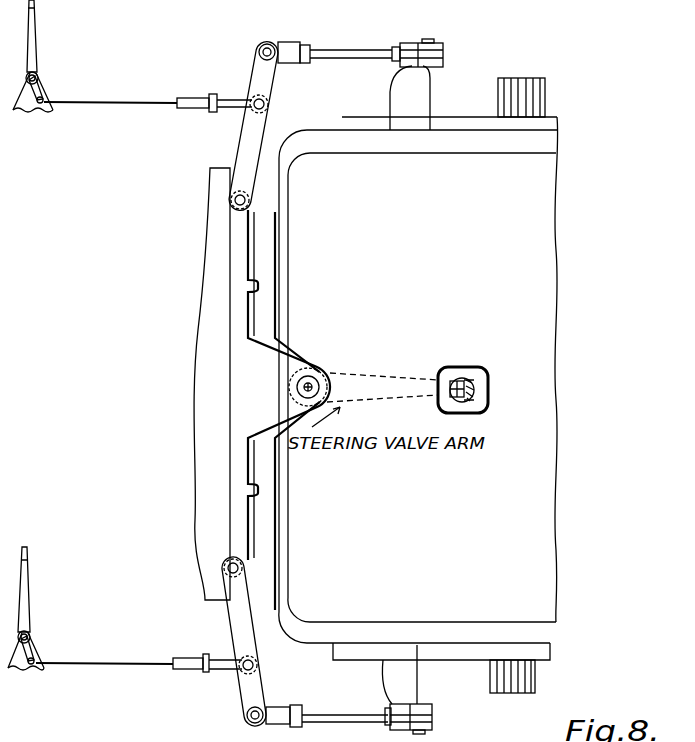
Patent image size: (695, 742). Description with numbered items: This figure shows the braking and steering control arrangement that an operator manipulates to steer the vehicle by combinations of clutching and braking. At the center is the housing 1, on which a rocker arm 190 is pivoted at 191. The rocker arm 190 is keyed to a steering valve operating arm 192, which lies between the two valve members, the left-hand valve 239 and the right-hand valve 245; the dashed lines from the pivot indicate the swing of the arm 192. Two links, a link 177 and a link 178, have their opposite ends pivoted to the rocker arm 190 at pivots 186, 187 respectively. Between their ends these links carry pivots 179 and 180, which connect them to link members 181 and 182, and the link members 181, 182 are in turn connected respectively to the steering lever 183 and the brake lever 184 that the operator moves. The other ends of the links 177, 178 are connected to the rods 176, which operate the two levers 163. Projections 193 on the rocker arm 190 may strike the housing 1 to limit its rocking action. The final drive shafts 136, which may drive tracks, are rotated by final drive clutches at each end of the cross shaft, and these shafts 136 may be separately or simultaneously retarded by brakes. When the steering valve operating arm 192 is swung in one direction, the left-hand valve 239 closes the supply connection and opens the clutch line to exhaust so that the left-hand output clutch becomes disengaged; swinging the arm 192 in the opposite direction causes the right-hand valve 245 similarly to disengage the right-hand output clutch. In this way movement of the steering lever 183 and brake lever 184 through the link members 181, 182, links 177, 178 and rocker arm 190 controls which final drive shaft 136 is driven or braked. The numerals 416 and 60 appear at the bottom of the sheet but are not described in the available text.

The housing 1 is at (553, 550).
The final drive shaft 136 is at (545, 90).
The lever 163 is at (430, 80).
The rod 176 is at (350, 50).
The link 177 is at (237, 622).
The link 178 is at (272, 78).
The pivot 179 is at (260, 665).
The pivot 180 is at (268, 106).
The link member 181 is at (180, 668).
The link member 182 is at (196, 109).
The steering lever 183 is at (27, 582).
The brake lever 184 is at (34, 46).
The pivot 186 is at (223, 563).
The pivot 187 is at (233, 203).
The rocker arm 190 is at (233, 322).
The pivot 191 is at (312, 377).
The steering valve operating arm 192 is at (367, 397).
The projection 193 is at (258, 283).
The left-hand valve 239 is at (460, 377).
The right-hand valve 245 is at (467, 400).
The element 416 is at (97, 732).
The element 60 is at (152, 733).